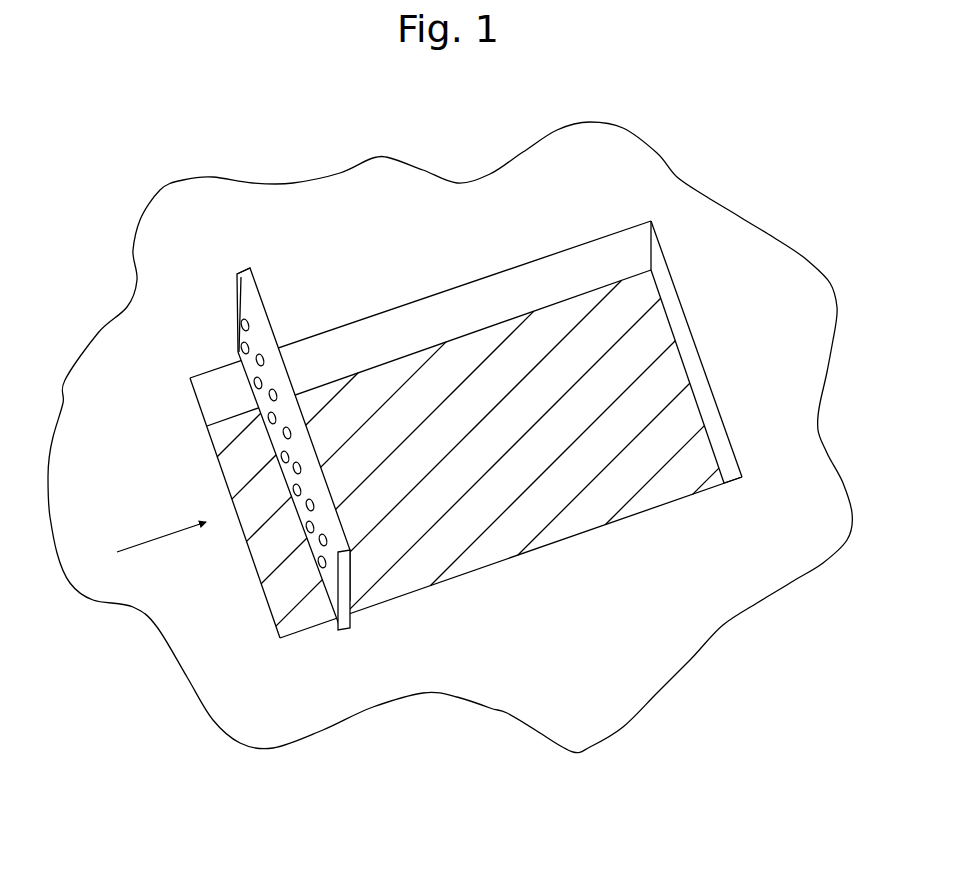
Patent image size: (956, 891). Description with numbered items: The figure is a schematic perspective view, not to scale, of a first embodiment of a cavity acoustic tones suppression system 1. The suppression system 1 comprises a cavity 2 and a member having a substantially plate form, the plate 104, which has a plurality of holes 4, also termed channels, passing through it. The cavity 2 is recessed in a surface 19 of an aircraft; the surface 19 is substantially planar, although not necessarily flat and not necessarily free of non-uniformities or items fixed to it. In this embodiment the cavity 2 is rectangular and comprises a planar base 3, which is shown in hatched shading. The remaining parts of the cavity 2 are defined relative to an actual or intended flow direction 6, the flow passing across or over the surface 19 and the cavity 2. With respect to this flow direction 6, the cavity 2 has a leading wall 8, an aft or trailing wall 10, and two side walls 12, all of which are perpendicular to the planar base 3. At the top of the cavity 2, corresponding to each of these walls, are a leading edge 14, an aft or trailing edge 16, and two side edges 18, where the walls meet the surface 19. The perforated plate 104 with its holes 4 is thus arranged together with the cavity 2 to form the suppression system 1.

The cavity acoustic tones suppression system 1 is at (719, 158).
The cavity 2 is at (483, 453).
The planar base 3 is at (673, 482).
The holes 4 is at (243, 346).
The flow direction 6 is at (145, 540).
The leading wall 8 is at (258, 430).
The aft wall 10 is at (450, 430).
The side walls 12 is at (422, 317).
The leading edge 14 is at (207, 431).
The aft edge 16 is at (679, 300).
The side edges 18 is at (530, 262).
The surface 19 is at (275, 202).
The plate 104 is at (239, 283).